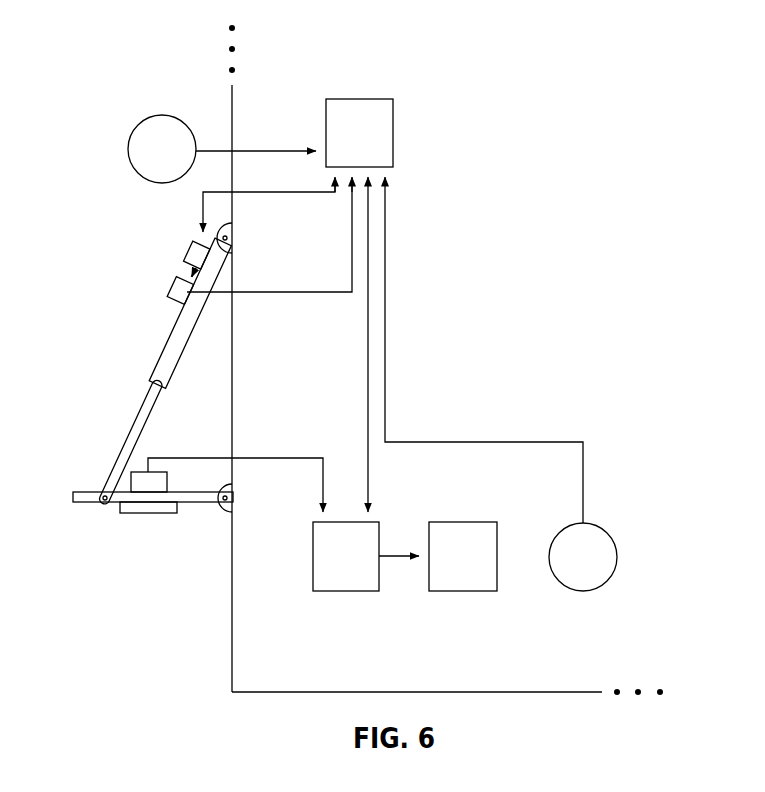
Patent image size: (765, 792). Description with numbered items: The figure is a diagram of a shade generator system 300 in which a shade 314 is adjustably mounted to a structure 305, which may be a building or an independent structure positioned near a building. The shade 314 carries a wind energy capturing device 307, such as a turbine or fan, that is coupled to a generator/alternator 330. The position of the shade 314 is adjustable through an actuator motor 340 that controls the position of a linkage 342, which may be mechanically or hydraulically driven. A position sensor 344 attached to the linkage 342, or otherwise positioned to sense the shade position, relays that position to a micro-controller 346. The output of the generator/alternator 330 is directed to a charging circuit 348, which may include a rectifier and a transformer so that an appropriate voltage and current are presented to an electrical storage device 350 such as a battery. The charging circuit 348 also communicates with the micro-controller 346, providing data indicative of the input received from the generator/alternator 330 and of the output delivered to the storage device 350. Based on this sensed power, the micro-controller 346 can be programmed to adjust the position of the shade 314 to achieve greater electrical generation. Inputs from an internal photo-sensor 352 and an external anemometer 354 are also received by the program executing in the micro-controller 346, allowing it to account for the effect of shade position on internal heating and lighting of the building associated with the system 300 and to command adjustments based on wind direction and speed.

The shade generator system 300 is at (545, 90).
The structure 305 is at (234, 97).
The wind energy capturing device 307 is at (143, 515).
The shade 314 is at (82, 500).
The generator/alternator 330 is at (138, 480).
The actuator motor 340 is at (190, 252).
The linkage 342 is at (170, 353).
The position sensor 344 is at (175, 290).
The micro-controller 346 is at (380, 137).
The charging circuit 348 is at (343, 580).
The electrical storage device 350 is at (467, 580).
The internal photo-sensor 352 is at (605, 557).
The external anemometer 354 is at (137, 150).